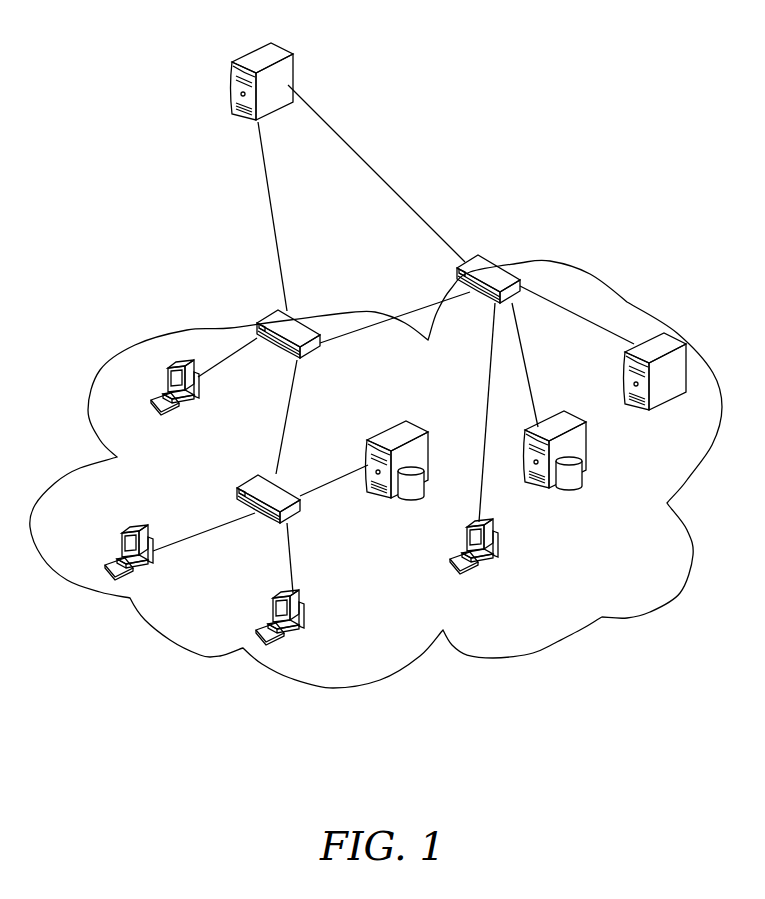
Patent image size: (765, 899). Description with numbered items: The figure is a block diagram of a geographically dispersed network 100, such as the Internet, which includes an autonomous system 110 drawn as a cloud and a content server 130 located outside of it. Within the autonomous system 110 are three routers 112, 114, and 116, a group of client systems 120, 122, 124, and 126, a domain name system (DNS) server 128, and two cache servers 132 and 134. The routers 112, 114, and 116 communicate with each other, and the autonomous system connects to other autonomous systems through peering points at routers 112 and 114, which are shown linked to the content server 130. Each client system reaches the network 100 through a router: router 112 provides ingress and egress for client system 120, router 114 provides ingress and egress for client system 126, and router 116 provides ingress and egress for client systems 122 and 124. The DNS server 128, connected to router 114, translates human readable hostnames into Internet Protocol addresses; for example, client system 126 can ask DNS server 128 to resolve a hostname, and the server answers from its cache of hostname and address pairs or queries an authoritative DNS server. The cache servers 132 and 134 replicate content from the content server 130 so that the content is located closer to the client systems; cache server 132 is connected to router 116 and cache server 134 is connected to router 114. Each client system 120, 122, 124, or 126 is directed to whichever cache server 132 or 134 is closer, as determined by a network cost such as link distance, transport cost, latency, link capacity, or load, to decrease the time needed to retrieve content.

The network 100 is at (118, 728).
The autonomous system 110 is at (163, 333).
The router 112 is at (265, 318).
The router 114 is at (492, 256).
The router 116 is at (244, 476).
The client system 120 is at (163, 413).
The client system 122 is at (147, 527).
The client system 124 is at (280, 593).
The client system 126 is at (480, 568).
The domain name system (DNS) server 128 is at (652, 417).
The content server 130 is at (258, 47).
The cache server 132 is at (382, 427).
The cache server 134 is at (562, 415).